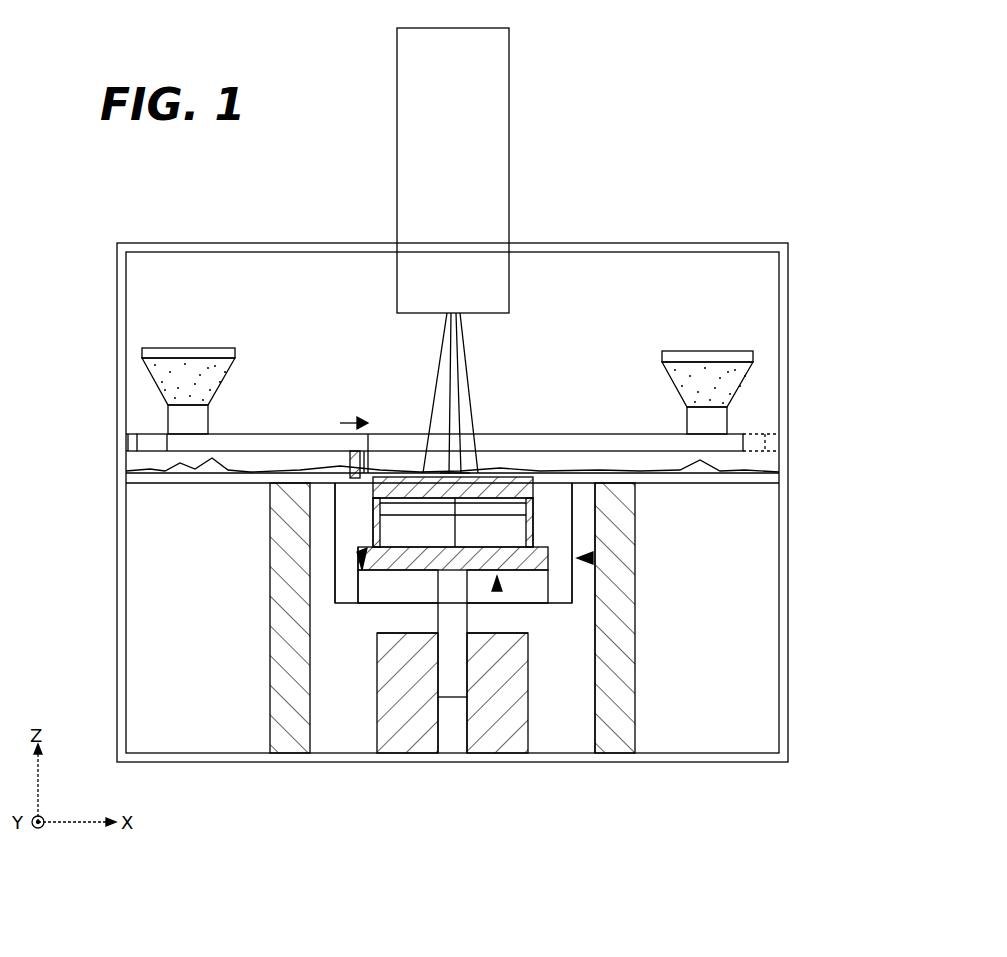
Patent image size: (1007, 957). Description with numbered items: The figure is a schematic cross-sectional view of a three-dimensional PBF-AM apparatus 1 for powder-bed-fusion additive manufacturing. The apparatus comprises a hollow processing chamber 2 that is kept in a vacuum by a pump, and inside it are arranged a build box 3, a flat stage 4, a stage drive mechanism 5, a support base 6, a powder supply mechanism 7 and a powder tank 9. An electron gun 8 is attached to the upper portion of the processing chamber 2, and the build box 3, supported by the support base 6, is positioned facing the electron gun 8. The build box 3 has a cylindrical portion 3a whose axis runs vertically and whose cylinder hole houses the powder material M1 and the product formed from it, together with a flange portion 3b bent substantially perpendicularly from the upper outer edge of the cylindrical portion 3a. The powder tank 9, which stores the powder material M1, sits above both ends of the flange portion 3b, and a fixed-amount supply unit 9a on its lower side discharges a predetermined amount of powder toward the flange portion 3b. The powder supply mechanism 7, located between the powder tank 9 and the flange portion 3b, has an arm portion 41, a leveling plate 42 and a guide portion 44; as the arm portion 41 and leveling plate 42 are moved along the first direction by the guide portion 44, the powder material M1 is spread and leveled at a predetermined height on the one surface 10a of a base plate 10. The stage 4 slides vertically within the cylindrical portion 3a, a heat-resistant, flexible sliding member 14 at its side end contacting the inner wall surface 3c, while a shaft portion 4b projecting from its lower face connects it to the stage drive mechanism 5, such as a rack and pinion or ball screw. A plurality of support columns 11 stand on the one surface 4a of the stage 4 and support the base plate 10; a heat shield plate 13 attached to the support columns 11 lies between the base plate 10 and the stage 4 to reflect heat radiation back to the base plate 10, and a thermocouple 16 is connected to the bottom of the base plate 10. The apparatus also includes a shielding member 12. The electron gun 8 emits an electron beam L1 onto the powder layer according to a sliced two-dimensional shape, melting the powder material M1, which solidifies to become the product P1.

The three-dimensional PBF-AM apparatus 1 is at (672, 84).
The processing chamber 2 is at (712, 243).
The build box 3 is at (615, 633).
The cylindrical portion 3a is at (556, 572).
The flange portion 3b is at (598, 480).
The inner wall surface 3c is at (550, 605).
The stage 4 is at (500, 660).
The one surface 4a is at (400, 712).
The shaft portion 4b is at (457, 683).
The stage drive mechanism 5 is at (540, 605).
The support base 6 is at (580, 566).
The powder supply mechanism 7 is at (278, 412).
The electron gun 8 is at (509, 132).
The powder tank 9 is at (158, 390).
The fixed-amount supply unit 9a is at (728, 420).
The base plate 10 is at (305, 473).
The one surface 10a is at (516, 470).
The support column 11 is at (372, 600).
The shielding member 12 is at (333, 565).
The heat shield plate 13 is at (543, 542).
The sliding member 14 is at (553, 563).
The thermocouple 16 is at (440, 690).
The arm portion 41 is at (352, 455).
The leveling plate 42 is at (364, 470).
The guide portion 44 is at (302, 440).
The electron beam L1 is at (466, 372).
The product P1 is at (480, 470).
The powder material M1 is at (544, 478).